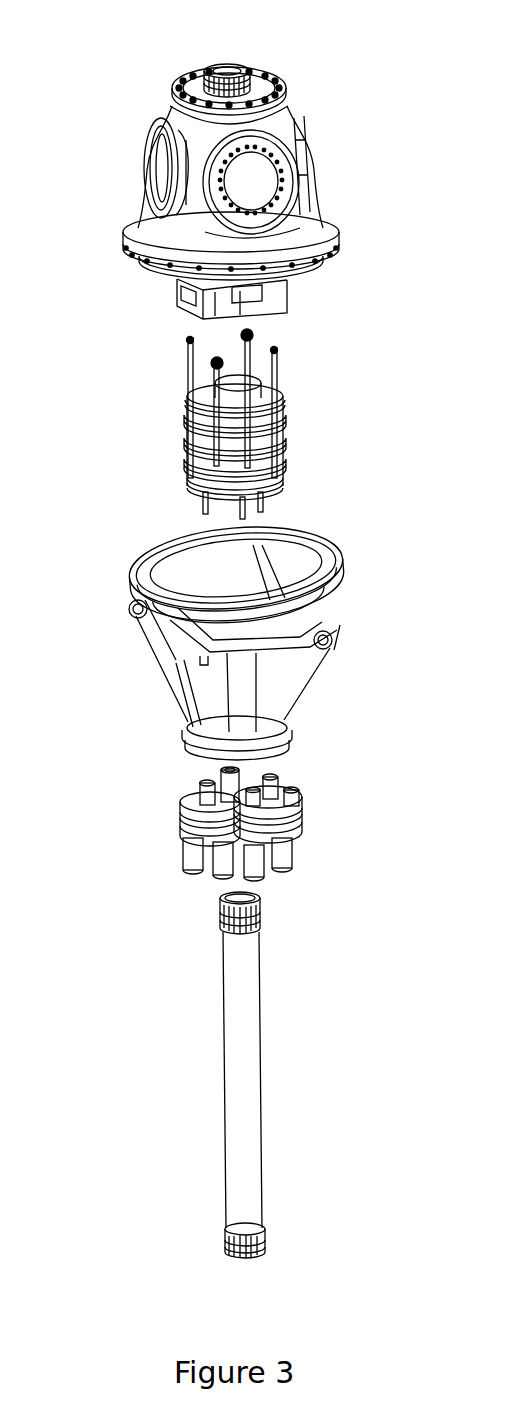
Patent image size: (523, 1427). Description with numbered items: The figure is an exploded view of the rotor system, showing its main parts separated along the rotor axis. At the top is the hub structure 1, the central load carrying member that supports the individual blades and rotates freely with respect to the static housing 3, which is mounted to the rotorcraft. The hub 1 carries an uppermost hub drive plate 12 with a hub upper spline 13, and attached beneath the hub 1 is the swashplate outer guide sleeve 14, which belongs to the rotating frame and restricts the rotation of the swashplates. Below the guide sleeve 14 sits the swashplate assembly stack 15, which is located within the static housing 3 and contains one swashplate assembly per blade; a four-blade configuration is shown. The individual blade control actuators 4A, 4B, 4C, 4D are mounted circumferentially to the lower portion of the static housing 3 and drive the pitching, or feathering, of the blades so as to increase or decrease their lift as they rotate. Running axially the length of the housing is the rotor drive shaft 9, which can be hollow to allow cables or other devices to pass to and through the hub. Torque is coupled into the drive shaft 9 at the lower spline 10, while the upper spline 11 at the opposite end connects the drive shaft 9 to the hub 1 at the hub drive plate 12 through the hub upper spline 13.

The hub structure 1 is at (138, 200).
The static housing 3 is at (328, 661).
The actuator 4A is at (242, 770).
The actuator 4B is at (305, 820).
The actuator 4C is at (279, 870).
The actuator 4D is at (176, 806).
The rotor drive shaft 9 is at (264, 1078).
The lower spline 10 is at (268, 1249).
The upper spline 11 is at (263, 915).
The hub drive plate 12 is at (262, 85).
The hub upper spline 13 is at (224, 69).
The swashplate outer guide sleeve 14 is at (295, 297).
The swashplate assembly stack 15 is at (305, 340).